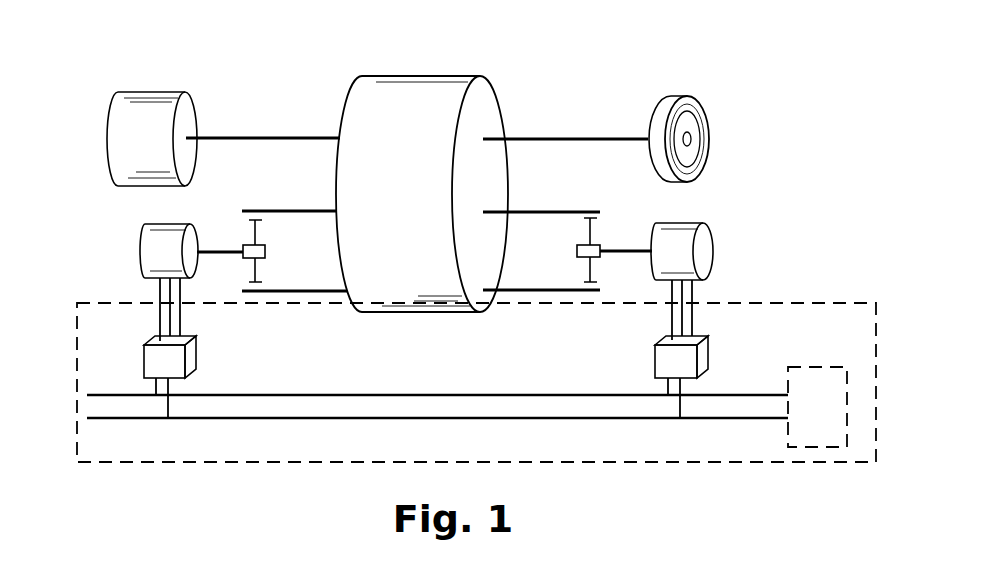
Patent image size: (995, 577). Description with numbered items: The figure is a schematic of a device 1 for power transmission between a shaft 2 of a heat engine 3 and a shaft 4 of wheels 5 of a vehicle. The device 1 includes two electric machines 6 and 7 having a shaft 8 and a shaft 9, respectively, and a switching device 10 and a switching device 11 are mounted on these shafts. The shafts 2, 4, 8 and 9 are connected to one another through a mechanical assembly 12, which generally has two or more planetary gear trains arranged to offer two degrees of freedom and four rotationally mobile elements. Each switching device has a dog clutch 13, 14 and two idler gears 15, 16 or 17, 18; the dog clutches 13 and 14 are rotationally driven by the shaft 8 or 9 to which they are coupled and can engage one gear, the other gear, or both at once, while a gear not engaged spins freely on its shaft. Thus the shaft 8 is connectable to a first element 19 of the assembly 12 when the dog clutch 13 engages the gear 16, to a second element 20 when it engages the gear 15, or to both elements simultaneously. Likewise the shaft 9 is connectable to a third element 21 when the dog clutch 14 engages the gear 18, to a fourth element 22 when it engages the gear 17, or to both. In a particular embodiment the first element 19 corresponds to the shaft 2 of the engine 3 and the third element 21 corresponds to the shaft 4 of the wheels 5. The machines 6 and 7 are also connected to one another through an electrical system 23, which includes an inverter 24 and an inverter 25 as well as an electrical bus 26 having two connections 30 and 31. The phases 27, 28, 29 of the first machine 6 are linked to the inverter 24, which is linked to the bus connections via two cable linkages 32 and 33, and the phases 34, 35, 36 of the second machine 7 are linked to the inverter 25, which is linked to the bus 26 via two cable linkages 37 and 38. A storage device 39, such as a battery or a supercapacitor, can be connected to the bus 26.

The device for power transmission 1 is at (411, 58).
The shaft of heat engine 2 is at (246, 137).
The heat engine 3 is at (146, 106).
The shaft of wheels 4 is at (578, 137).
The wheels 5 is at (706, 140).
The first electric machine 6 is at (140, 245).
The second electric machine 7 is at (713, 245).
The shaft of first electric machine 8 is at (213, 251).
The shaft of second electric machine 9 is at (612, 256).
The first switching device 10 is at (285, 252).
The second switching device 11 is at (548, 251).
The mechanical assembly 12 is at (340, 164).
The first dog clutch 13 is at (266, 248).
The second dog clutch 14 is at (577, 248).
The idler gear 15 is at (259, 260).
The idler gear 16 is at (233, 213).
The idler gear 17 is at (542, 292).
The idler gear 18 is at (592, 228).
The first element 19 is at (305, 210).
The second element 20 is at (300, 292).
The third element 21 is at (578, 210).
The fourth element 22 is at (523, 292).
The electrical system 23 is at (77, 345).
The first inverter 24 is at (196, 352).
The second inverter 25 is at (708, 360).
The electrical bus 26 is at (397, 380).
The phase of first machine 27 is at (160, 284).
The phase of first machine 28 is at (165, 318).
The phase of first machine 29 is at (181, 318).
The bus connection 30 is at (270, 394).
The bus connection 31 is at (402, 419).
The cable linkage 32 is at (155, 386).
The cable linkage 33 is at (170, 405).
The phase of second machine 34 is at (696, 320).
The phase of second machine 35 is at (694, 290).
The phase of second machine 36 is at (672, 322).
The cable linkage 37 is at (666, 388).
The cable linkage 38 is at (681, 408).
The storage device 39 is at (830, 367).